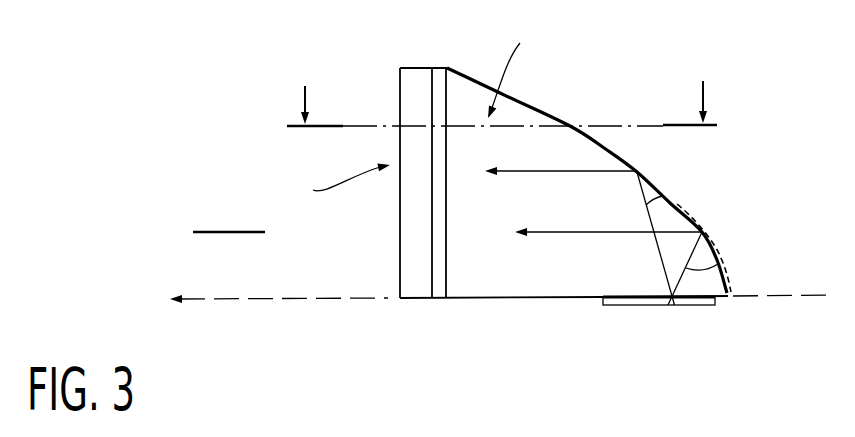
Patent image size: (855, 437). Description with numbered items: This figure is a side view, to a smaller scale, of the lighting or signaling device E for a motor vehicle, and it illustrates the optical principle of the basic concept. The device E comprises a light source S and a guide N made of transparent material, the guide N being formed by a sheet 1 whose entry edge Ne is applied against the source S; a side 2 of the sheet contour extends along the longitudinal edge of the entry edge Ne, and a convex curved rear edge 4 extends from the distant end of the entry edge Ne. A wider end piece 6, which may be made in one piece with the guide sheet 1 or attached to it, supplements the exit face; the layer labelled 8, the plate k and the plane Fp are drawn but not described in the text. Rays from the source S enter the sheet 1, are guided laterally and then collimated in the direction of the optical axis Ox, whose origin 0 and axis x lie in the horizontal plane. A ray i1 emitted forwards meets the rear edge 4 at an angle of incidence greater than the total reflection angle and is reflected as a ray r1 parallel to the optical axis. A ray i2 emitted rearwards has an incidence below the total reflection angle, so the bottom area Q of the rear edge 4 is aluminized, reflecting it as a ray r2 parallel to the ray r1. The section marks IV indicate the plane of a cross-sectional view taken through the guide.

The sheet 1 is at (535, 118).
The side 2 is at (537, 297).
The rear edge 4 is at (633, 168).
The end piece 6 is at (413, 247).
The inner layer 8 is at (440, 92).
The guide N is at (516, 70).
The lighting or signaling device E is at (342, 184).
The reflected ray r1 is at (577, 171).
The reflected ray r2 is at (582, 232).
The ray i1 is at (665, 195).
The ray i2 is at (722, 265).
The bottom area Q is at (707, 223).
The light source S is at (672, 305).
The detector plate k is at (615, 303).
The focal plane Fp is at (658, 305).
The entry edge Ne is at (493, 297).
The optical axis x is at (275, 313).
The optical axis origin 0 is at (782, 310).
The section IV- IV is at (321, 79).